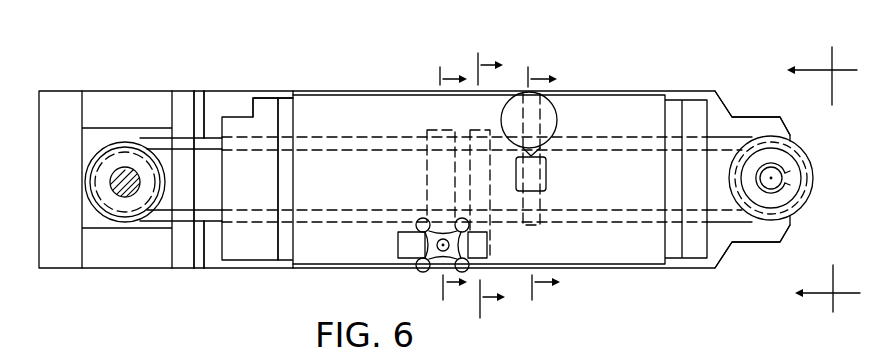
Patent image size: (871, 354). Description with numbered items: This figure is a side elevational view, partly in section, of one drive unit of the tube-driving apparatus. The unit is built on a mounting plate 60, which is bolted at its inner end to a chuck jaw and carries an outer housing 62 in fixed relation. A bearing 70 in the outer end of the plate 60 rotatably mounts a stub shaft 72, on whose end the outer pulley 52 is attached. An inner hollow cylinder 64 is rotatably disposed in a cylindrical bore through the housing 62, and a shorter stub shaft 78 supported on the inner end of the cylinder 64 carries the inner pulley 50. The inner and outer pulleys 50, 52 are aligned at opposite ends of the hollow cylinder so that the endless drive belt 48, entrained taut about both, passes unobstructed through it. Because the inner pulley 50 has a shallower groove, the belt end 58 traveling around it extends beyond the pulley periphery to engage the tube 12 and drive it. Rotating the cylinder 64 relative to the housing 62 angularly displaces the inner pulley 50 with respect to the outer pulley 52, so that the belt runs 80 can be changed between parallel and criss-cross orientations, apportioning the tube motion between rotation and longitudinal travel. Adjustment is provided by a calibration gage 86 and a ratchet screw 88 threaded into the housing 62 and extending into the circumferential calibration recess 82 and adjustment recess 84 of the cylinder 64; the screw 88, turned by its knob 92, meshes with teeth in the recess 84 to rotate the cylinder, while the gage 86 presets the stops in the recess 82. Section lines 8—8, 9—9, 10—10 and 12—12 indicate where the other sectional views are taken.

The drive belt 48 is at (738, 222).
The inner pulley 50 is at (800, 170).
The outer pulley 52 is at (128, 197).
The end of drive belt 58 is at (812, 195).
The mounting plate 60 is at (258, 262).
The outer housing 62 is at (352, 105).
The inner hollow cylinder 64 is at (267, 105).
The bearing 70 is at (287, 103).
The stub shaft 72 is at (128, 167).
The stub shaft 78 is at (769, 166).
The runs of drive belt 80 is at (210, 138).
The calibration recess 82 is at (540, 201).
The adjustment recess 84 is at (427, 173).
The calibration gage 86 is at (560, 123).
The ratchet screw 88 is at (419, 269).
The knob 92 is at (418, 244).
The section line 8- 8 is at (534, 184).
The section line 9- 9 is at (442, 183).
The section line 10- 10 is at (476, 184).
The tube 12 is at (824, 187).